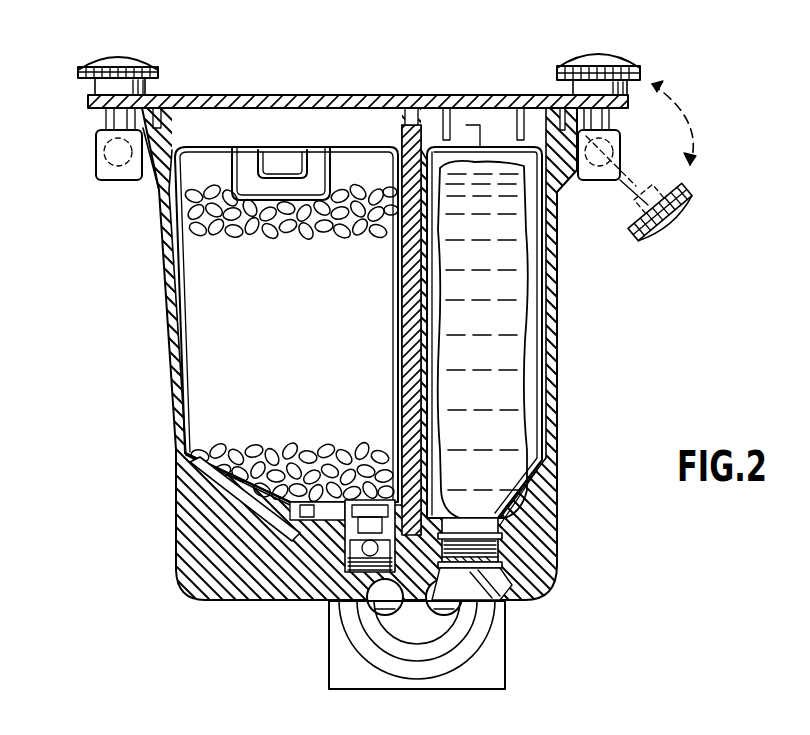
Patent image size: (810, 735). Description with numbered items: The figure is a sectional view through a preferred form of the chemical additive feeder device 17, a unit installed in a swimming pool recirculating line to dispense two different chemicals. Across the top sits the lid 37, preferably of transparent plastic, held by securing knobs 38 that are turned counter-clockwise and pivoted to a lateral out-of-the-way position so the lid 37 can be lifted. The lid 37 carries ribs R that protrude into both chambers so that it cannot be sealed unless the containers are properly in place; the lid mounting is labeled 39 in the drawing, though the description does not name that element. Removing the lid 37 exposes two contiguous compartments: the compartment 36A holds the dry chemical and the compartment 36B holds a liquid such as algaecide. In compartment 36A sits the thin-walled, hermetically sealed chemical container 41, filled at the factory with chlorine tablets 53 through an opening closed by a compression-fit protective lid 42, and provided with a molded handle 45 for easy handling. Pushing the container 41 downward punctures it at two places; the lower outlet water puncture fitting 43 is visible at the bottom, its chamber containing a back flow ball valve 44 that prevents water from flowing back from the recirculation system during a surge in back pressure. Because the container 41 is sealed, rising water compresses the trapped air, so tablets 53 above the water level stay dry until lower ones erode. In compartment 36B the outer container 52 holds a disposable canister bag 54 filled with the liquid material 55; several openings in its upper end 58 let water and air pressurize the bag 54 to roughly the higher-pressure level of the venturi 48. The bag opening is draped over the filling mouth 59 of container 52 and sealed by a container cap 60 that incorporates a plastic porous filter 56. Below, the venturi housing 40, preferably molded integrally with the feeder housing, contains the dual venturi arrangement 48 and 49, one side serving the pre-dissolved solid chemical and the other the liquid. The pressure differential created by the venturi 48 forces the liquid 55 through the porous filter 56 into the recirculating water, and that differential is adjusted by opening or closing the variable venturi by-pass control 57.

The chemical additive feeder device 17 is at (133, 302).
The lid 37 is at (100, 112).
The securing knobs 38 is at (612, 58).
The funnel wall 39 is at (183, 105).
The ribs R is at (186, 104).
The compartment 36A is at (287, 528).
The compartment 36B is at (542, 468).
The molded handle 45 is at (255, 160).
The chlorine tablets 53 is at (182, 480).
The chemical canister or container 41 is at (182, 505).
The protective lid 42 is at (192, 578).
The outlet water puncture fitting 43 is at (240, 602).
The back flow ball valve 44 is at (335, 597).
The venturi 48 is at (462, 606).
The venturi 49 is at (385, 612).
The venturi housing 40 is at (505, 648).
The container 52 is at (542, 215).
The canister bag 54 is at (527, 243).
The liquid material 55 is at (518, 303).
The porous filter 56 is at (512, 538).
The variable venturi by-pass control 57 is at (520, 588).
The upper end 58 is at (474, 150).
The filling mouth 59 is at (502, 541).
The container cap 60 is at (512, 565).